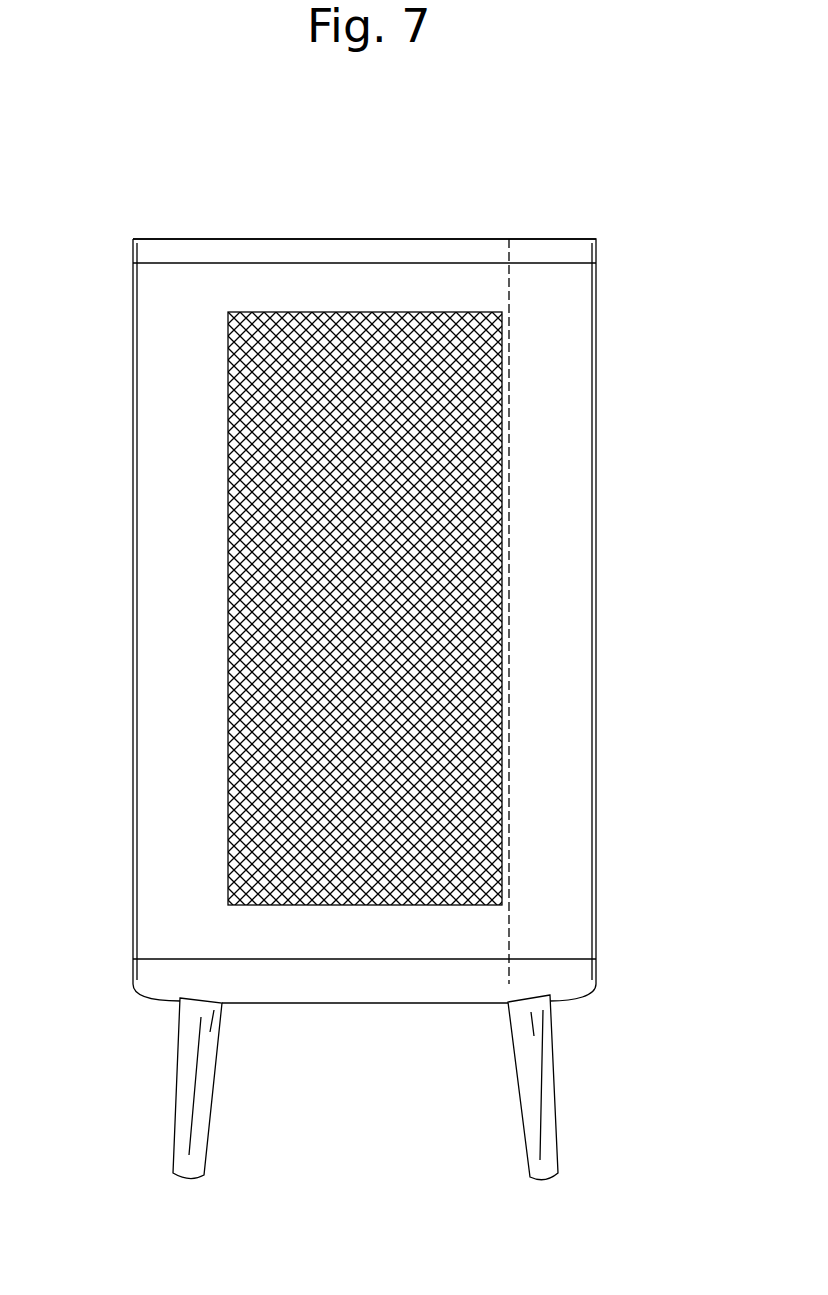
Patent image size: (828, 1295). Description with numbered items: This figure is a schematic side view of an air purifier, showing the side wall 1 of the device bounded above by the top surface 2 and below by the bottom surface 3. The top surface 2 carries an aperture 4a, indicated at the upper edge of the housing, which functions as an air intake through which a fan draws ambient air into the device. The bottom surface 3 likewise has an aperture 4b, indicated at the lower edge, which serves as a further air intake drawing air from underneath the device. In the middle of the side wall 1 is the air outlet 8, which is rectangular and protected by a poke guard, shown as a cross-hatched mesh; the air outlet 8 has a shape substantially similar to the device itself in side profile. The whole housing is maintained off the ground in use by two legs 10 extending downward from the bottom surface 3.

The side wall 1 is at (571, 662).
The top surface 2 is at (597, 248).
The bottom surface 3 is at (597, 965).
The aperture 4a is at (420, 232).
The aperture 4b is at (327, 1012).
The air outlet 8 is at (275, 678).
The legs 10 is at (180, 1090).